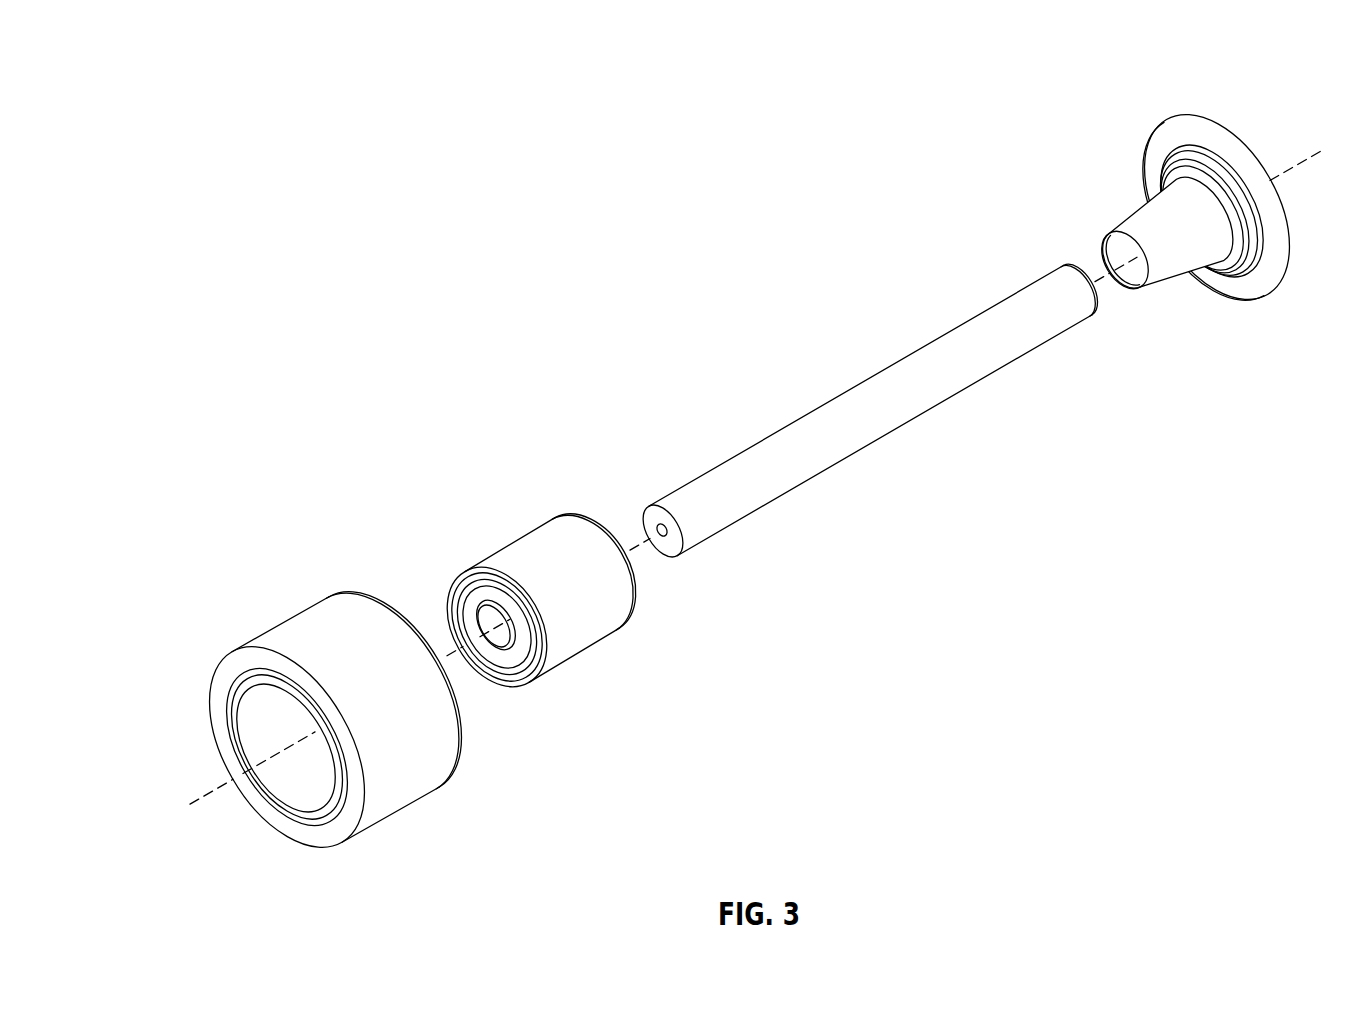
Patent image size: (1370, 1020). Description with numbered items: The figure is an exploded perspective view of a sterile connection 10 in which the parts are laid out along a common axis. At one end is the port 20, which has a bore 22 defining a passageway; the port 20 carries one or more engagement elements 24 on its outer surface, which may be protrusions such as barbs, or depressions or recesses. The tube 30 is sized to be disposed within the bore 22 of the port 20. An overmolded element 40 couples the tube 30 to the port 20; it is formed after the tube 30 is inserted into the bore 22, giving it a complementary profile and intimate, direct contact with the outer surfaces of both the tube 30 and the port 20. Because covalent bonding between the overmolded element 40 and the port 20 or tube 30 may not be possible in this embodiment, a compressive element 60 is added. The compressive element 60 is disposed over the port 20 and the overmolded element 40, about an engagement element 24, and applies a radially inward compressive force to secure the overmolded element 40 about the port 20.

The sterile connection 10 is at (693, 155).
The port 20 is at (1187, 138).
The bore 22 is at (1127, 278).
The engagement element 24 is at (1138, 223).
The tube 30 is at (905, 407).
The overmolded element 40 is at (578, 637).
The compressive element 60 is at (393, 787).